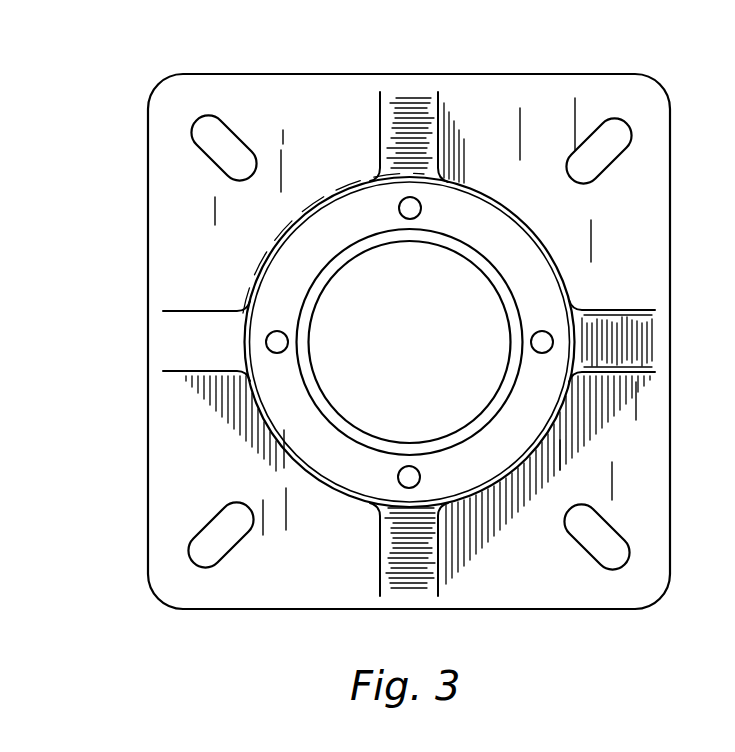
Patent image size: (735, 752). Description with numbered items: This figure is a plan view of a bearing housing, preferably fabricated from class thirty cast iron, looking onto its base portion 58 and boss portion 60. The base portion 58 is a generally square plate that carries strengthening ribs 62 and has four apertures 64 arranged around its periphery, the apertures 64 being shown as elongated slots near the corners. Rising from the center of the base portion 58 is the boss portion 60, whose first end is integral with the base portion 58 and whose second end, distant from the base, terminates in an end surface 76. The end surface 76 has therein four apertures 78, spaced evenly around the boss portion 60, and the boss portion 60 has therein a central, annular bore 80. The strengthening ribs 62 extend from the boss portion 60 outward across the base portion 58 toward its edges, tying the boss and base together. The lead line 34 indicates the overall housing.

The flange assembly 34 is at (657, 80).
The base portion 58 is at (633, 433).
The boss portion 60 is at (517, 238).
The strengthening ribs 62 is at (403, 108).
The apertures 64 is at (195, 138).
The end surface 76 is at (352, 465).
The apertures 78 is at (421, 208).
The central annular bore 80 is at (428, 308).